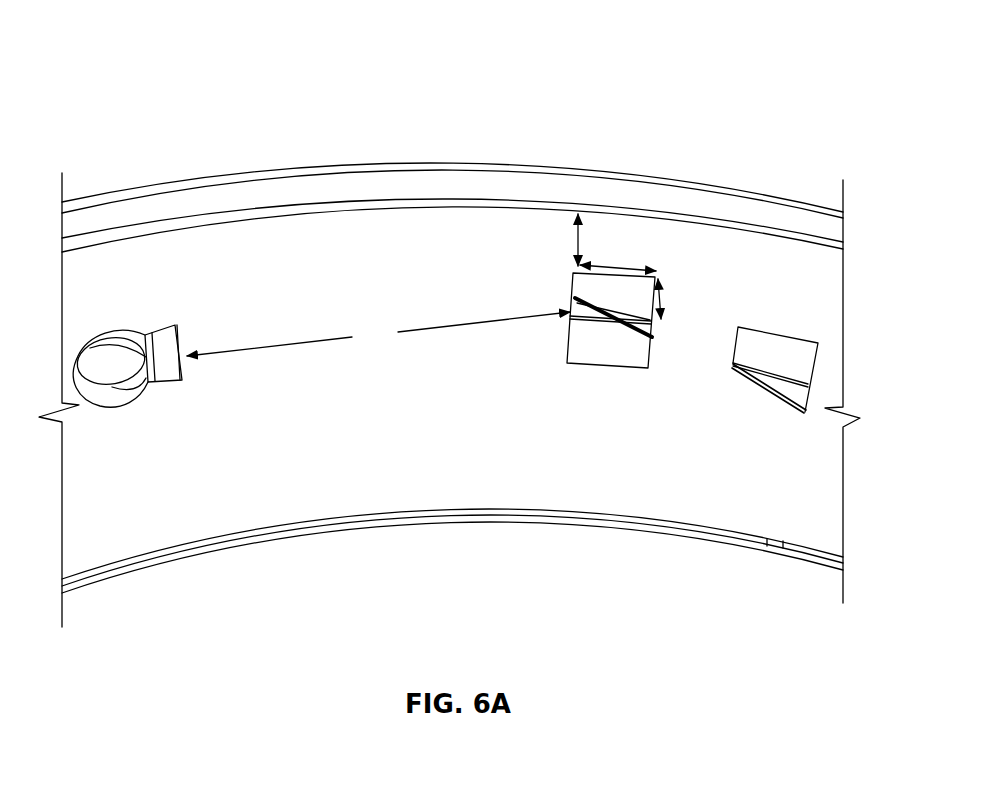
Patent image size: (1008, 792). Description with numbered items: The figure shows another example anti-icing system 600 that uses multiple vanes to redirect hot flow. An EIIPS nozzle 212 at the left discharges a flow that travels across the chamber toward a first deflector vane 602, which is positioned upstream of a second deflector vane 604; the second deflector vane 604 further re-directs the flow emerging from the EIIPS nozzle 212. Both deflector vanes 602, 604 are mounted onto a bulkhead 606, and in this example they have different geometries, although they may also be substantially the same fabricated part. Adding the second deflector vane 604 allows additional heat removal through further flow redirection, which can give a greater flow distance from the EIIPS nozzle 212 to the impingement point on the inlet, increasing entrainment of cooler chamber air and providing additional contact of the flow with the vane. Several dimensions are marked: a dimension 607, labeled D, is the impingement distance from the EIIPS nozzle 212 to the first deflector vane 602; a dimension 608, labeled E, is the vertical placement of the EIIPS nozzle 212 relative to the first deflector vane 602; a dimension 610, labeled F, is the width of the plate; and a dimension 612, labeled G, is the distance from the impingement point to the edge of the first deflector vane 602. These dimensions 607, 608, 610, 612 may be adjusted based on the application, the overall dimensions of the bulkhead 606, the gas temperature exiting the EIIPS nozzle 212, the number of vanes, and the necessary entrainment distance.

The anti-icing system 600 is at (717, 49).
The first deflector vane 602 is at (598, 352).
The second deflector vane 604 is at (787, 390).
The bulkhead 606 is at (273, 503).
The dimension D 607 is at (372, 313).
The dimension E 608 is at (556, 220).
The dimension F 610 is at (620, 232).
The dimension G 612 is at (707, 306).
The EIIPS nozzle 212 is at (120, 340).